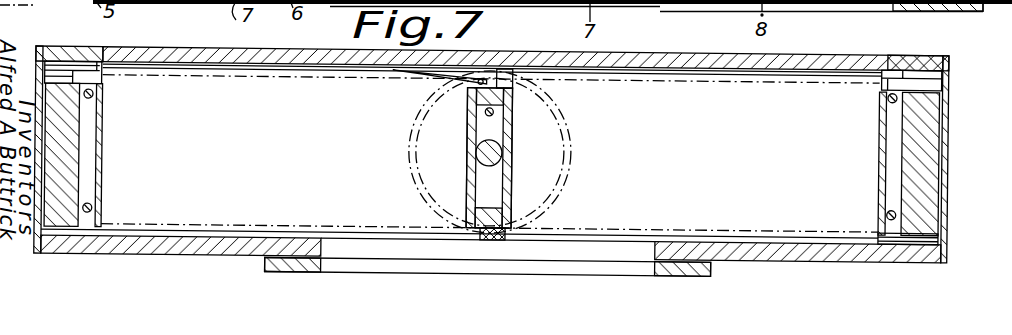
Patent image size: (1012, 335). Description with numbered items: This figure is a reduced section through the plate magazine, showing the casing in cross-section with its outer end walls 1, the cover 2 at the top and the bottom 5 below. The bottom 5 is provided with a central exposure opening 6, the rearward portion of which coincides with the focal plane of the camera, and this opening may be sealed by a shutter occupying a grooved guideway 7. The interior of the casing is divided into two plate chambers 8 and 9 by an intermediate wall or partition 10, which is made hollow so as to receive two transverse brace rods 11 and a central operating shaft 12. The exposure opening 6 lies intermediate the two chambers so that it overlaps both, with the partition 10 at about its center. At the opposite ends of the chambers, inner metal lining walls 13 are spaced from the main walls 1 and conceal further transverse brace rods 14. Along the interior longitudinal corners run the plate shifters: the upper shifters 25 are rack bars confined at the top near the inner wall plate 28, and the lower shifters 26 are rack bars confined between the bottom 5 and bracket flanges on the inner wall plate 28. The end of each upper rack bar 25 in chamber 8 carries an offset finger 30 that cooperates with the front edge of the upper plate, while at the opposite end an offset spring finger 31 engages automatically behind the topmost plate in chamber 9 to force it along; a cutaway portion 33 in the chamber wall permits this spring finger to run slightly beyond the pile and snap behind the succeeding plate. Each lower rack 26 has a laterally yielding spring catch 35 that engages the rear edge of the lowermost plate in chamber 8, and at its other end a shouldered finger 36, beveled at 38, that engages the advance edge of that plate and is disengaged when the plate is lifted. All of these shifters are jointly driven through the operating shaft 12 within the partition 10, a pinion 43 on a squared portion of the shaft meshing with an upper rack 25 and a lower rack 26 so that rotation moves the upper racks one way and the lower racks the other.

The outer end walls of the magazine casing 1 is at (43, 190).
The cover 2 is at (183, 52).
The bottom 5 is at (213, 250).
The central exposure opening 6 is at (362, 266).
The grooved guideway 7 is at (345, 262).
The plate chamber 8 is at (238, 155).
The plate chamber 9 is at (683, 155).
The intermediate wall or partition 10 is at (503, 134).
The transverse brace rods 11 is at (474, 118).
The central operating shaft 12 is at (474, 164).
The inner metal lining walls 13 is at (103, 142).
The transverse brace rods 14 is at (93, 207).
The upper shifters 25 is at (256, 78).
The lower shifters 26 is at (662, 230).
The inner wall plate 28 is at (314, 172).
The offset finger 30 is at (94, 63).
The offset spring finger 31 is at (426, 86).
The cutaway portion 33 is at (890, 88).
The laterally yielding spring catch 35 is at (498, 244).
The shouldered finger 36 is at (893, 230).
The bevel 38 is at (947, 203).
The pinion 43 is at (575, 146).